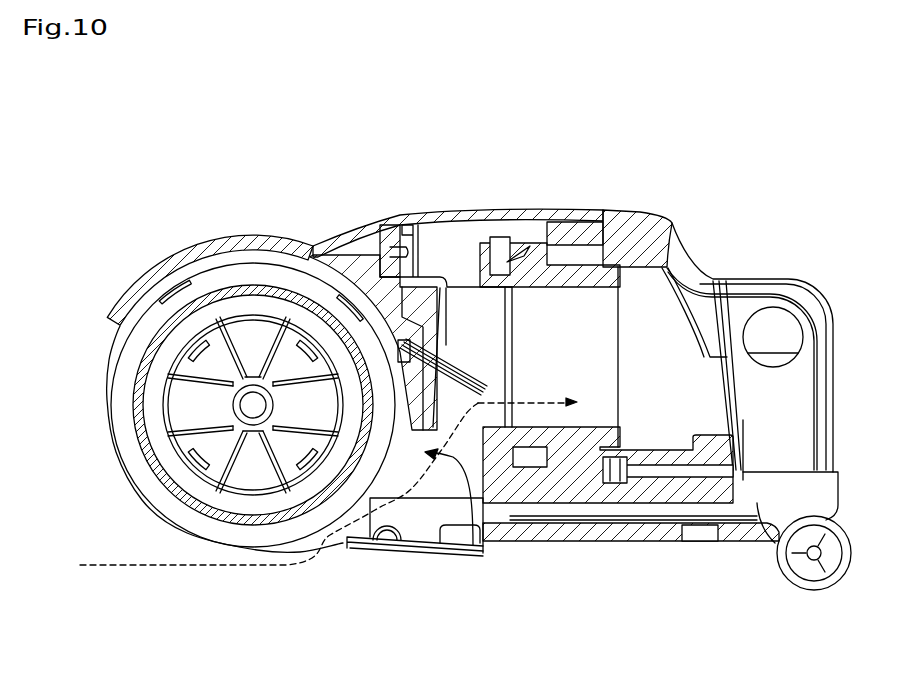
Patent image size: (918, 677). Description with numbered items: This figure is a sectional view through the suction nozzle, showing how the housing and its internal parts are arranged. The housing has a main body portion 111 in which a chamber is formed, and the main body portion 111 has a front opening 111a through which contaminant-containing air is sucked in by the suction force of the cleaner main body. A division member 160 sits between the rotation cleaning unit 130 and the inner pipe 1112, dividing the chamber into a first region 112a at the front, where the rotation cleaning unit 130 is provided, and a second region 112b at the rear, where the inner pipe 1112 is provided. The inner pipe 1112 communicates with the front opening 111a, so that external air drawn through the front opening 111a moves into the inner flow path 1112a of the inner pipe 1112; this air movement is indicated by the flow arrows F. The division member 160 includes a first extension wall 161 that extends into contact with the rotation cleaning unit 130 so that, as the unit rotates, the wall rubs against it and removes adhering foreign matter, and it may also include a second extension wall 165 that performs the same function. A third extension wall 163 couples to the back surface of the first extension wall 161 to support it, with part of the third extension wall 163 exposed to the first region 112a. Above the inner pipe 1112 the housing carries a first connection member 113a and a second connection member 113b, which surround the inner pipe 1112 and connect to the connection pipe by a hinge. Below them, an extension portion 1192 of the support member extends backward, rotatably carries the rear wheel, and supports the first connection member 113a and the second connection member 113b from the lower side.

The main body portion 111 is at (142, 284).
The front opening 111a is at (121, 488).
The first region 112a is at (250, 256).
The second region 112b is at (487, 349).
The first connection member 113a is at (637, 240).
The second connection member 113b is at (360, 228).
The rotation cleaning unit 130 is at (122, 405).
The division member 160 is at (473, 545).
The first extension wall 161 is at (393, 488).
The third extension wall 163 is at (437, 472).
The second extension wall 165 is at (398, 352).
The inner pipe 1112 is at (552, 346).
The inner flow path 1112a is at (527, 258).
The extension portion 1192 is at (635, 528).
The air flow F is at (271, 493).